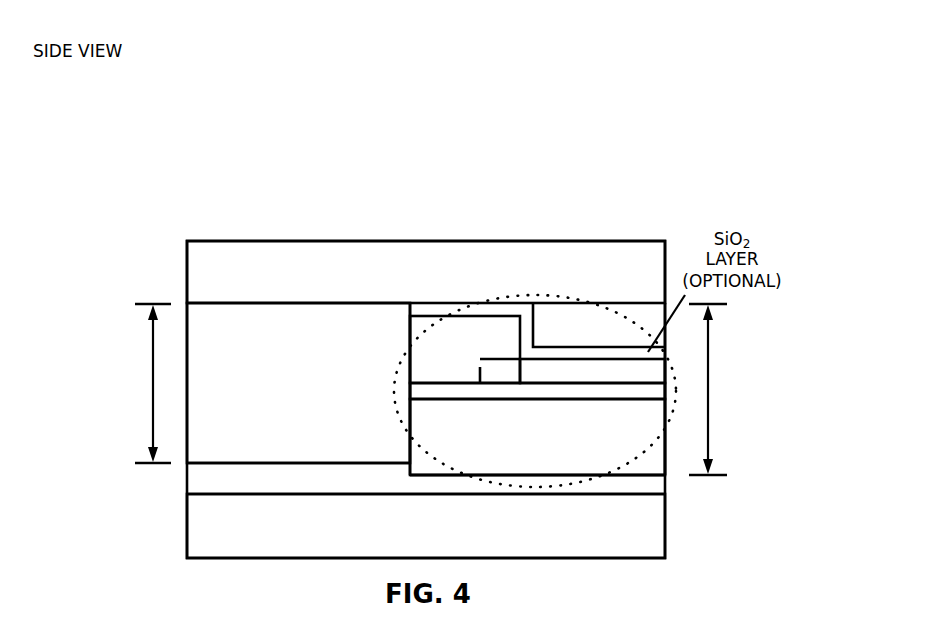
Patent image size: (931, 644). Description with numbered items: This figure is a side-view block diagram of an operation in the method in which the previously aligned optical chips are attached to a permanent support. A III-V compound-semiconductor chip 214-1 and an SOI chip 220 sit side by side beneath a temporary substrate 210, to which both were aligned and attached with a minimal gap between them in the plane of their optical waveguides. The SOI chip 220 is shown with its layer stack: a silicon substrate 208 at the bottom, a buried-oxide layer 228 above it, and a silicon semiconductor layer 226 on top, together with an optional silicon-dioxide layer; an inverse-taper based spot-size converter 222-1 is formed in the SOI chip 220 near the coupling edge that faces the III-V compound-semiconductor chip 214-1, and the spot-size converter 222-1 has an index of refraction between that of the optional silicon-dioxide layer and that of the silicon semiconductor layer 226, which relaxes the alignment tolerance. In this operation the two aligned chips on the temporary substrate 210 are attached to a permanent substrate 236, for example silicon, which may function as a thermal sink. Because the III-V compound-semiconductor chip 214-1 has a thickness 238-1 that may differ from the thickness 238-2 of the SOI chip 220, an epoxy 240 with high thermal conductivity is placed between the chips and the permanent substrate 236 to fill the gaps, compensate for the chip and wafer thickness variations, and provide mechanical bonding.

The temporary substrate 210 is at (426, 272).
The III-V compound-semiconductor chip 214-1 is at (298, 383).
The SOI chip 220 is at (577, 298).
The silicon substrate 208 is at (537, 437).
The buried-oxide layer 228 is at (505, 392).
The silicon semiconductor layer 226 is at (568, 372).
The spot-size converter 222-1 is at (465, 342).
The permanent substrate 236 is at (426, 526).
The epoxy 240 is at (223, 483).
The thickness 238-1 is at (153, 407).
The thickness 238-2 is at (708, 414).